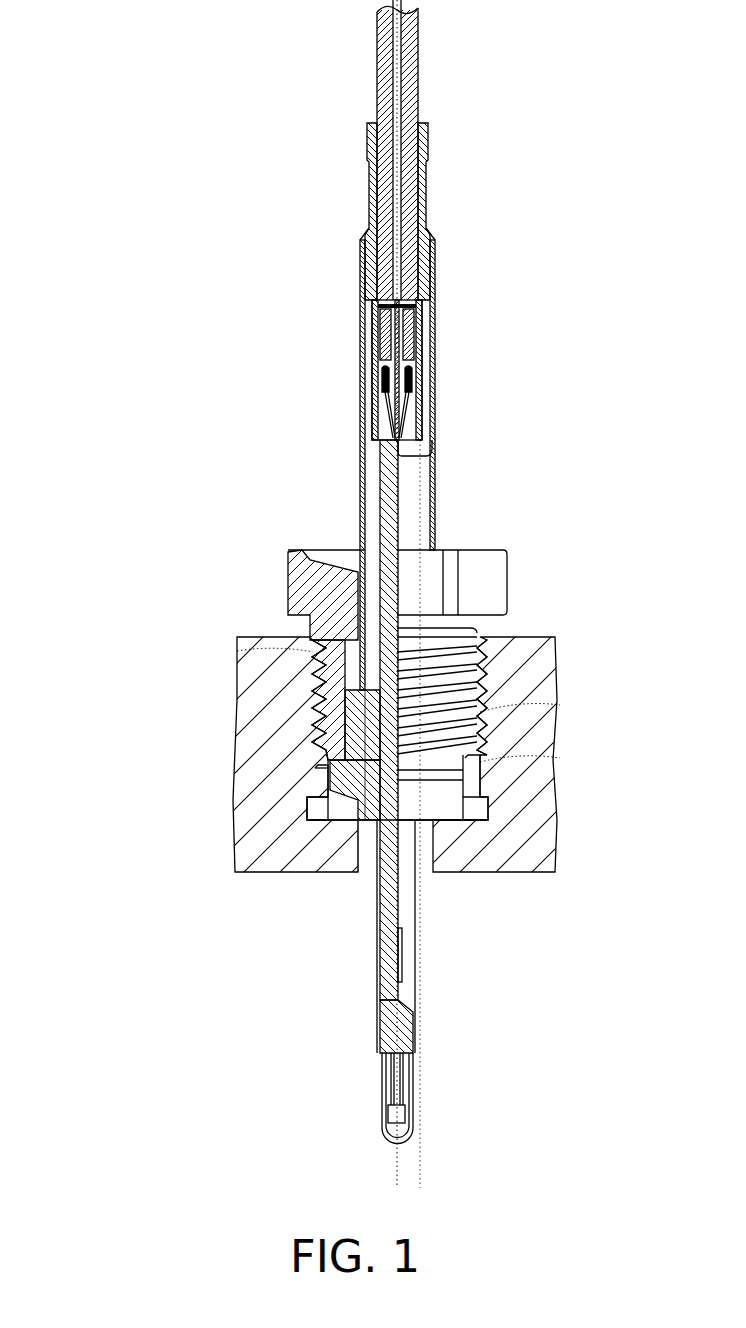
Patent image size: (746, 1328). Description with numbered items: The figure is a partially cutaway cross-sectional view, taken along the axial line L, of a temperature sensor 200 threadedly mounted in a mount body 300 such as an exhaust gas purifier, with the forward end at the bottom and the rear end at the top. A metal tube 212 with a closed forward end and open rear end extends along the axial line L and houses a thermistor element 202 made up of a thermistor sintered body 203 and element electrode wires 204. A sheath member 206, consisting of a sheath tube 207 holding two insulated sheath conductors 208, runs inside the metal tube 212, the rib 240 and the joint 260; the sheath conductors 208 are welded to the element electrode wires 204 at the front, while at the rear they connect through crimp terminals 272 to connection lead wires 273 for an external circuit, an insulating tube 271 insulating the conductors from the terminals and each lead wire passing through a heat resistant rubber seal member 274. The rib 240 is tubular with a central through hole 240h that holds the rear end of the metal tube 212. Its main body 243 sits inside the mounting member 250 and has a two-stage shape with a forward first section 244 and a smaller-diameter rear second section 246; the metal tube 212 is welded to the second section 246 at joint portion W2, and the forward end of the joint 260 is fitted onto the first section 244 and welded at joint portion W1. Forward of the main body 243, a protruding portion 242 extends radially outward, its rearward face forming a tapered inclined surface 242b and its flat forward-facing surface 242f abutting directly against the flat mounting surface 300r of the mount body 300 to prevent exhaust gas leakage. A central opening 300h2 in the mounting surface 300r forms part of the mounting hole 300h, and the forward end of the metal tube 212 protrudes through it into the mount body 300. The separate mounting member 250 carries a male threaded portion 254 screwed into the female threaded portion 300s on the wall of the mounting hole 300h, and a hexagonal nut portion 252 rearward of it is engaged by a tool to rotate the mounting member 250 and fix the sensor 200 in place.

The temperature sensor 200 is at (224, 82).
The connection lead wires 273 is at (377, 95).
The seal member 274 is at (428, 131).
The joint 260 is at (360, 470).
The insulating tube 271 is at (404, 378).
The crimp terminals 272 is at (380, 353).
The sheath conductors 208 is at (385, 428).
The metal tube 212 is at (378, 955).
The sheath tube 207 is at (392, 1013).
The sheath member 206 is at (324, 1037).
The element electrode wires 204 is at (382, 1100).
The thermistor sintered body 203 is at (382, 1123).
The thermistor element 202 is at (324, 1114).
The mounting member 250 is at (474, 685).
The hexagonal nut portion 252 is at (507, 563).
The threaded portion 254 is at (477, 634).
The rib 240 is at (245, 813).
The main body 243 is at (221, 755).
The first section 244 is at (320, 727).
The second section 246 is at (340, 690).
The protruding portion 242 is at (275, 845).
The inclined surface 242b is at (318, 762).
The forward-facing surface 242f is at (360, 823).
The through hole 240h is at (377, 832).
The mount body 300 is at (353, 753).
The mounting hole 300h is at (298, 636).
The female threaded portion 300s is at (300, 652).
The mounting surface 300r is at (307, 801).
The central opening 300h2 is at (371, 842).
The joint portion W1 is at (540, 759).
The joint portion W2 is at (540, 704).
The axial line L is at (398, 1172).